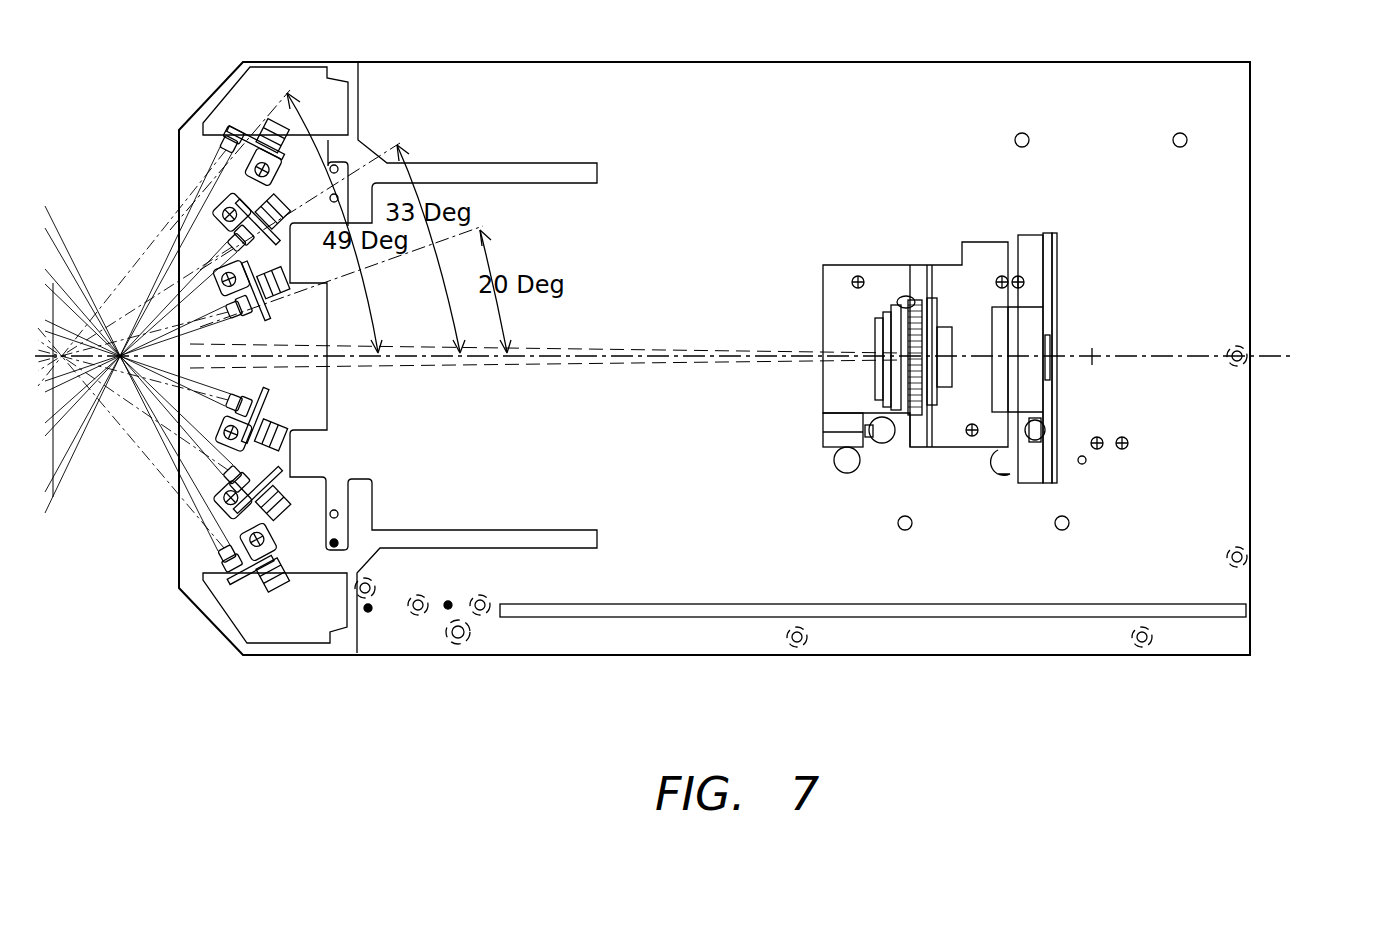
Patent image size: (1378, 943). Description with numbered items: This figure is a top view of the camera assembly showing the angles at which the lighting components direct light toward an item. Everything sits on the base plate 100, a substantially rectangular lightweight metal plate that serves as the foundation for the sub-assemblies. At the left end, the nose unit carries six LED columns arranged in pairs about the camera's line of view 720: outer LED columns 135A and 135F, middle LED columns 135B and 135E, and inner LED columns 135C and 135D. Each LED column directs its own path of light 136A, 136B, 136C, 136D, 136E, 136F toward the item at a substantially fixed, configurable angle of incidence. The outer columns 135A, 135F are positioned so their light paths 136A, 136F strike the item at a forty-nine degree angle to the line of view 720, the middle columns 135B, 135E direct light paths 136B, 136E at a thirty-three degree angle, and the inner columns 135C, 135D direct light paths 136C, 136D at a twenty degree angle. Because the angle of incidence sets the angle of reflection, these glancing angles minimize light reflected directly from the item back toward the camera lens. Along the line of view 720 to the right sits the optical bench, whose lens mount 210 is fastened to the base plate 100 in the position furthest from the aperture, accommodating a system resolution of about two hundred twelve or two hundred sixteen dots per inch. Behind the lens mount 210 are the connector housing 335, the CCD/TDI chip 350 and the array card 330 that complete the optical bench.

The base plate 100 is at (1250, 638).
The outer LED column 135A is at (218, 158).
The middle LED column 135B is at (230, 237).
The inner LED column 135C is at (280, 327).
The inner LED column 135D is at (280, 400).
The middle LED column 135E is at (203, 467).
The outer LED column 135F is at (230, 575).
The path of light 136A is at (193, 187).
The path of light 136B is at (190, 267).
The path of light 136C is at (250, 338).
The path of light 136D is at (280, 373).
The path of light 136E is at (203, 450).
The path of light 136F is at (203, 530).
The lens mount 210 is at (860, 265).
The array card 330 is at (1053, 482).
The connector housing 335 is at (993, 412).
The CCD/TDI chip 350 is at (1045, 335).
The line of view 720 is at (567, 354).